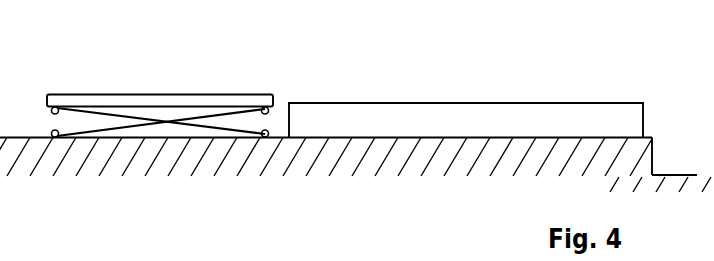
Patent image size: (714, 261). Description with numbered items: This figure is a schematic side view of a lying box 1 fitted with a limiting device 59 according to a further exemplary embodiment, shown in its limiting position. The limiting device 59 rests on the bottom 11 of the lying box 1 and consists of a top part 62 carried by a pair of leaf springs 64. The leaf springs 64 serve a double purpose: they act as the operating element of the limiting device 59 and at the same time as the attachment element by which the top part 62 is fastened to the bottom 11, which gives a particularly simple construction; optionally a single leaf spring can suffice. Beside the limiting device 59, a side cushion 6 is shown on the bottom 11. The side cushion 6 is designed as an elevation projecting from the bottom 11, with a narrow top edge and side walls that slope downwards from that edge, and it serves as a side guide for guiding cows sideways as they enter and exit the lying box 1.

The machine 1 is at (488, 82).
The side cushion 6 is at (419, 117).
The bottom 11 is at (485, 137).
The limiting device 59 is at (190, 82).
The top part 62 is at (78, 99).
The leaf springs 64 is at (135, 118).